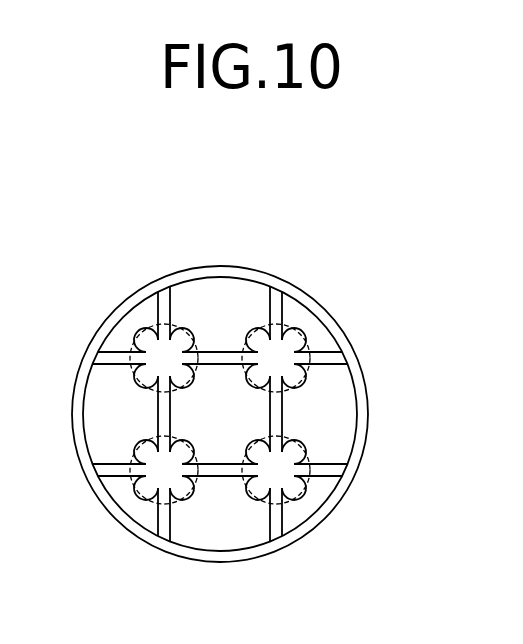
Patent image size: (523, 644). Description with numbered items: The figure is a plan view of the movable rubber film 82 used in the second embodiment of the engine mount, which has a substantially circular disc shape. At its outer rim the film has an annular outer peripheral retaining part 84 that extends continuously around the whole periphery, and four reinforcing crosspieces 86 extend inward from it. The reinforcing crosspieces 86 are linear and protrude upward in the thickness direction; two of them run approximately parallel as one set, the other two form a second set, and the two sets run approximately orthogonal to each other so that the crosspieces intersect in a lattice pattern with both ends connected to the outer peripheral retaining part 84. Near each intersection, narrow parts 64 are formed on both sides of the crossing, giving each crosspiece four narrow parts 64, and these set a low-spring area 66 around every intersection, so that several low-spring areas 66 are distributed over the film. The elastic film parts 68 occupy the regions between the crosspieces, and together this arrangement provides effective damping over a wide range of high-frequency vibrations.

The movable rubber film 82 is at (403, 354).
The outer peripheral retaining part 84 is at (93, 350).
The reinforcing crosspieces 86 is at (170, 306).
The narrow parts 64 is at (258, 357).
The low-spring area 66 is at (139, 333).
The elastic film parts 68 is at (145, 315).